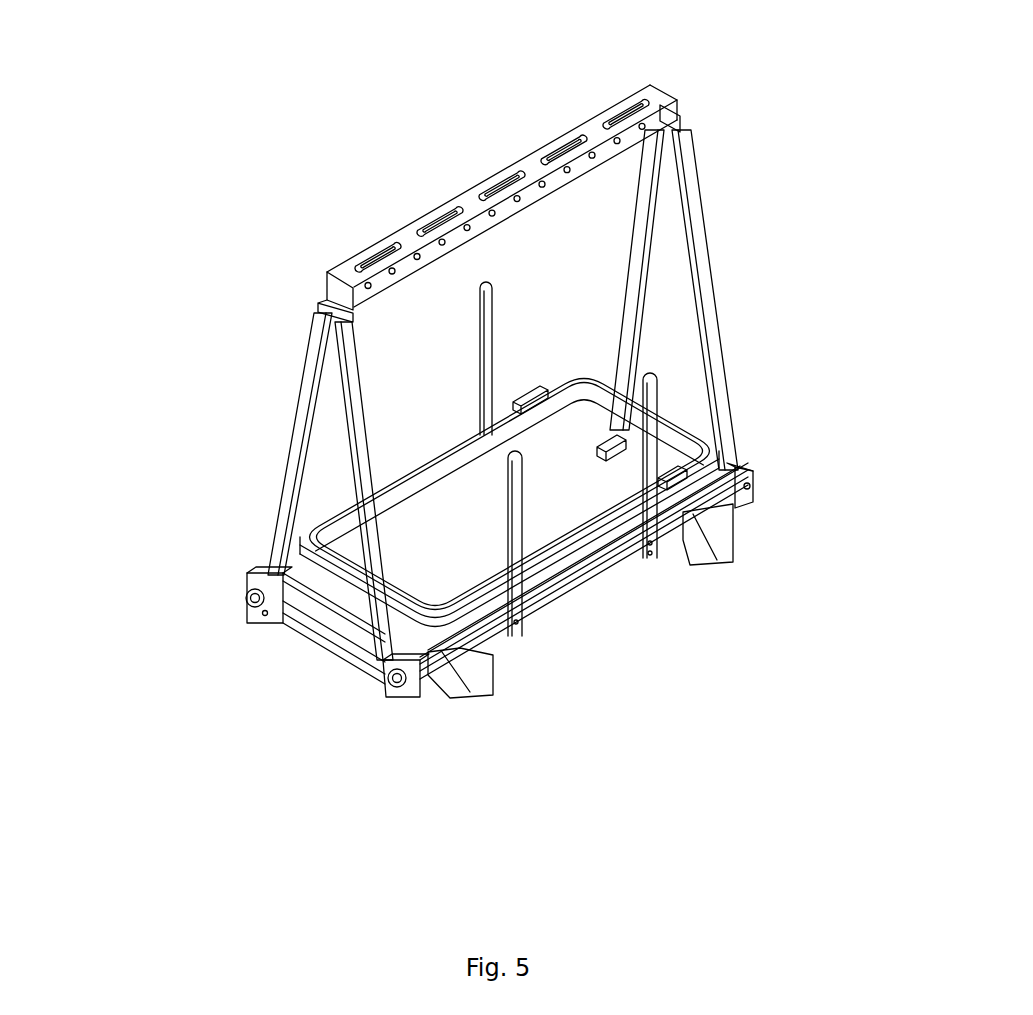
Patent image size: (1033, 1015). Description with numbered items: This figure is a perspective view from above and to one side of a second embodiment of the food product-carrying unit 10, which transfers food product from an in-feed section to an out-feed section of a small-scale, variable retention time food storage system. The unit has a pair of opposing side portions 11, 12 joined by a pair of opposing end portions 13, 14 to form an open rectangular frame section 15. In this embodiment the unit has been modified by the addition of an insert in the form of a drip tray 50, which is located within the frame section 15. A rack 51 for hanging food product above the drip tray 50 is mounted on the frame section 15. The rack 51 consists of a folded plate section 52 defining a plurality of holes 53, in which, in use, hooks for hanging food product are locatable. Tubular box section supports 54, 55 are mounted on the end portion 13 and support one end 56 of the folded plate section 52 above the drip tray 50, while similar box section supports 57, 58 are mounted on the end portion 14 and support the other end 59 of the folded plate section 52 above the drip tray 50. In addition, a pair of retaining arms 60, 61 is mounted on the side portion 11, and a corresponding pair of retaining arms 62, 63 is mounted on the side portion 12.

The food product-carrying unit 10 is at (233, 318).
The side portion 11 is at (632, 560).
The side portion 12 is at (327, 520).
The end portion 13 is at (348, 642).
The end portion 14 is at (752, 464).
The frame section 15 is at (548, 607).
The drip tray 50 is at (563, 537).
The rack 51 is at (391, 131).
The folded plate section 52 is at (527, 165).
The holes 53 is at (592, 157).
The tubular box section support 54 is at (307, 403).
The tubular box section support 55 is at (368, 470).
The end of the folded plate section 56 is at (332, 290).
The box section support 57 is at (640, 158).
The box section support 58 is at (704, 215).
The end of the folded plate section 59 is at (660, 92).
The retaining arm 60 is at (518, 560).
The retaining arm 61 is at (602, 520).
The retaining arm 62 is at (365, 360).
The retaining arm 63 is at (495, 355).